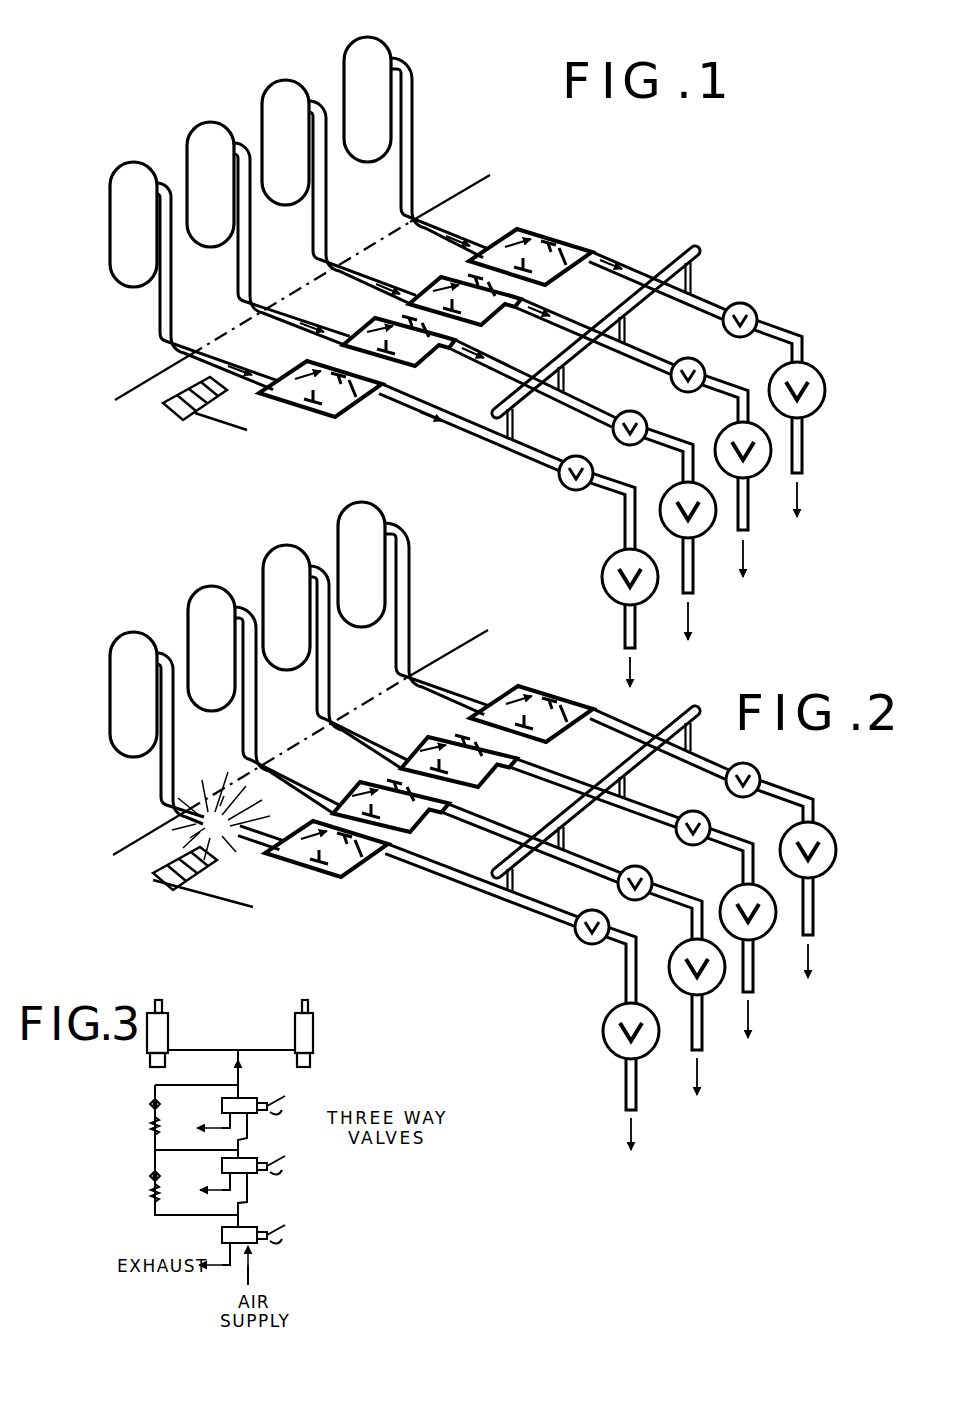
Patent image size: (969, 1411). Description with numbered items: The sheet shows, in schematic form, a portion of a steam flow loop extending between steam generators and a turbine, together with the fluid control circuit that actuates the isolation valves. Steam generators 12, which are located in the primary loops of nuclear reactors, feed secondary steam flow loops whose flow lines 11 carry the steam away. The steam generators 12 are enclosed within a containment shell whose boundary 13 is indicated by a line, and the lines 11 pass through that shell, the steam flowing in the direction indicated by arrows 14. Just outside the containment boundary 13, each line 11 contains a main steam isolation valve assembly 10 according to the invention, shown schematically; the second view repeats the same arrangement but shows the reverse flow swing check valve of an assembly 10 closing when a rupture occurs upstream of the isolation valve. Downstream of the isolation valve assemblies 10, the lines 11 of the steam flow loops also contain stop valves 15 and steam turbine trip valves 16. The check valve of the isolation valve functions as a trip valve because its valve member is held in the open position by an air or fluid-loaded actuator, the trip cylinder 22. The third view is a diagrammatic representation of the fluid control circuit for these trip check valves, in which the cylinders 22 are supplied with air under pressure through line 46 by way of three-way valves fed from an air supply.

In FIG. 1, the main steam isolation valve assembly 10 is at (583, 237).
In FIG. 2, the main steam isolation valve assembly 10 is at (345, 897).
In FIG. 1, the flow line 11 is at (453, 228).
In FIG. 2, the flow line 11 is at (322, 691).
In FIG. 1, the steam generator 12 is at (134, 162).
In FIG. 2, the steam generator 12 is at (197, 594).
In FIG. 1, the containment shell boundary 13 is at (441, 203).
In FIG. 2, the containment shell boundary 13 is at (449, 650).
In FIG. 1, the arrow 14 is at (437, 434).
In FIG. 1, the stop valve 15 is at (746, 302).
In FIG. 2, the stop valve 15 is at (758, 769).
In FIG. 1, the steam turbine trip valve 16 is at (811, 367).
In FIG. 2, the steam turbine trip valve 16 is at (827, 827).
In FIG. 3, the trip cylinder 22 is at (164, 1020).
In FIG. 3, the line 46 is at (197, 1050).